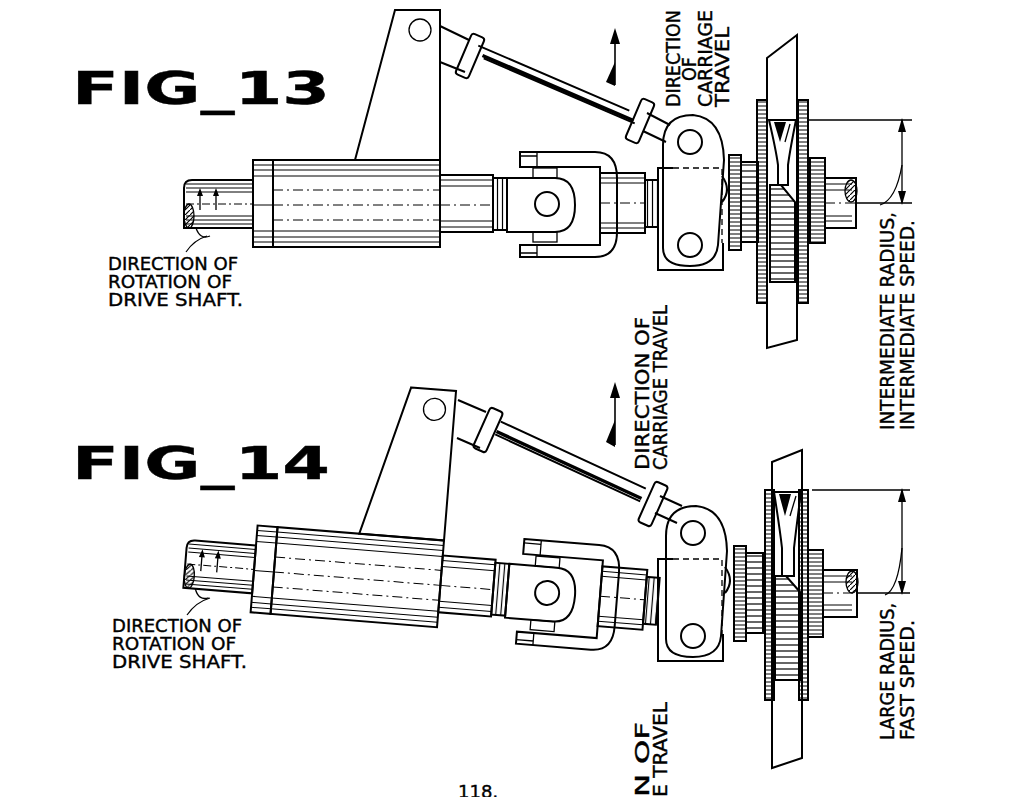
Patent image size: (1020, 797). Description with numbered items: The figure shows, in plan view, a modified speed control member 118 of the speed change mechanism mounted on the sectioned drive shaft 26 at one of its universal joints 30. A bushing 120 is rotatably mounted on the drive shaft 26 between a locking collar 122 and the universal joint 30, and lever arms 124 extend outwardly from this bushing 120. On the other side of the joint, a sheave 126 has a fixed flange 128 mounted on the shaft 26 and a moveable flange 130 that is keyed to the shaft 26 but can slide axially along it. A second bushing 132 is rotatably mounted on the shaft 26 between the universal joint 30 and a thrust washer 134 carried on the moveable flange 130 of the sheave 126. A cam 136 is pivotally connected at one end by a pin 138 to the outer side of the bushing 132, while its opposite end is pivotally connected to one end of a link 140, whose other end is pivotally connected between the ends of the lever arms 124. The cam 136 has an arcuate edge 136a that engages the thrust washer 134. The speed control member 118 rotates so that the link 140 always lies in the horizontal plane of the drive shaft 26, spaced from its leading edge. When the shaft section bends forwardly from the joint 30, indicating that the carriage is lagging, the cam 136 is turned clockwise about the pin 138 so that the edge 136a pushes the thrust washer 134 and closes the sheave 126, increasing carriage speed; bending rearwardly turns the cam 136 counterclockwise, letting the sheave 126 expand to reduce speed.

In FIG. 13, the drive shaft 26 is at (186, 180).
In FIG. 14, the drive shaft 26 is at (197, 548).
In FIG. 13, the universal joint 30 is at (553, 151).
In FIG. 14, the universal joint 30 is at (553, 544).
In FIG. 13, the speed control member 118 is at (539, 64).
In FIG. 14, the speed control member 118 is at (527, 432).
In FIG. 13, the bushing 120 is at (310, 160).
In FIG. 14, the bushing 120 is at (310, 527).
In FIG. 13, the locking collar 122 is at (258, 158).
In FIG. 14, the locking collar 122 is at (258, 525).
In FIG. 13, the lever arms 124 is at (420, 110).
In FIG. 14, the lever arms 124 is at (422, 497).
In FIG. 13, the sheave 126 is at (758, 301).
In FIG. 14, the sheave 126 is at (764, 688).
In FIG. 13, the fixed flange 128 is at (808, 272).
In FIG. 14, the fixed flange 128 is at (808, 662).
In FIG. 13, the moveable flange 130 is at (757, 283).
In FIG. 14, the moveable flange 130 is at (765, 677).
In FIG. 13, the bushing 132 is at (662, 264).
In FIG. 14, the bushing 132 is at (660, 652).
In FIG. 13, the thrust washer 134 is at (735, 155).
In FIG. 14, the thrust washer 134 is at (745, 545).
In FIG. 13, the cam 136 is at (707, 211).
In FIG. 14, the cam 136 is at (707, 601).
In FIG. 13, the arcuate edge 136a is at (726, 189).
In FIG. 14, the arcuate edge 136a is at (729, 578).
In FIG. 13, the pin 138 is at (690, 258).
In FIG. 14, the pin 138 is at (690, 649).
In FIG. 13, the link 140 is at (526, 90).
In FIG. 14, the link 140 is at (532, 468).